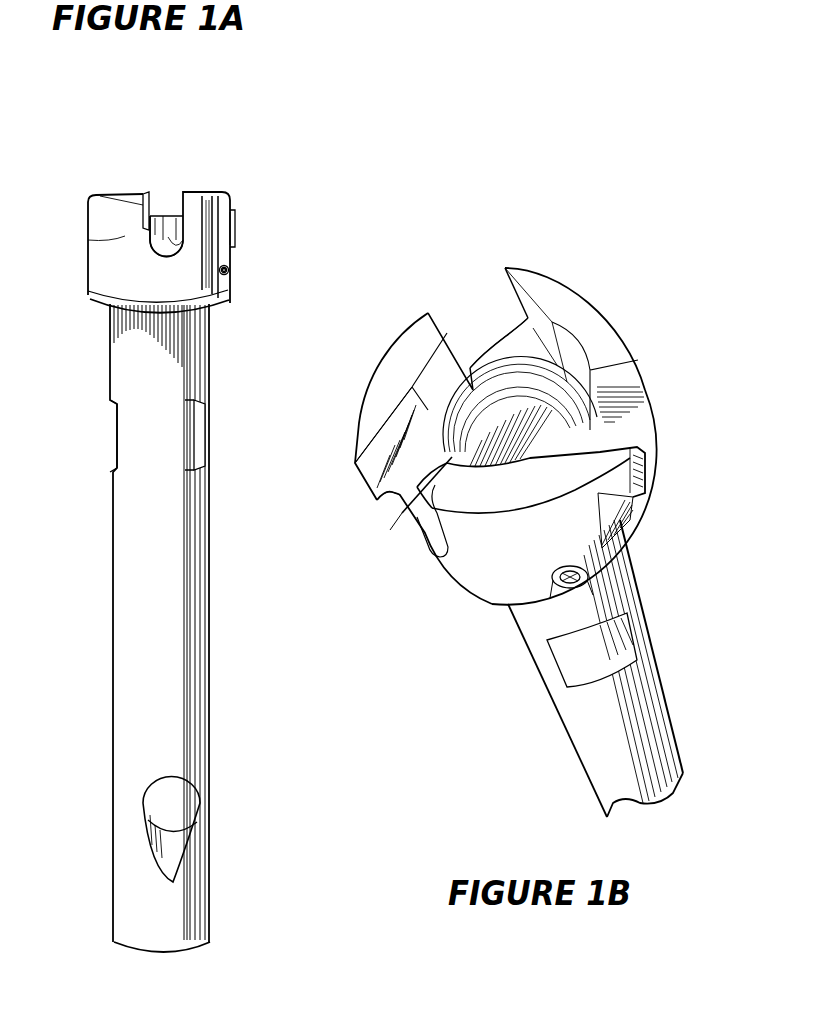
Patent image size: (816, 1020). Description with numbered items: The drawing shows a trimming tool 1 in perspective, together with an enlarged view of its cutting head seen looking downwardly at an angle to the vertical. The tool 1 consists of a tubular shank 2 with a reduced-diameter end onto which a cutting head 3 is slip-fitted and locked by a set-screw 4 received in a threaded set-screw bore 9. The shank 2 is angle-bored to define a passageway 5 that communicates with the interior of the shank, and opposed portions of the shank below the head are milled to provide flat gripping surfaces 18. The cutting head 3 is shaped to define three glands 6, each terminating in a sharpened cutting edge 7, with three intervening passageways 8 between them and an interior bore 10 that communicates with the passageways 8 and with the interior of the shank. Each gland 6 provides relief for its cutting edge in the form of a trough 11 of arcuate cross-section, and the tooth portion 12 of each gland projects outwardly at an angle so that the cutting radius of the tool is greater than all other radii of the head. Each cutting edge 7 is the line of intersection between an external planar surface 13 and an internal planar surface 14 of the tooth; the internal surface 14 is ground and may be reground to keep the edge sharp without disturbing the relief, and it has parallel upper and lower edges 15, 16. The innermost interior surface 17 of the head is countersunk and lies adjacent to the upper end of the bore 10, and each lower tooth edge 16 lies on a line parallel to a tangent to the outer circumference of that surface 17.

In FIG. 1A, the tool 1 is at (70, 548).
In FIG. 1A, the tubular shank 2 is at (153, 628).
In FIG. 1B, the tubular shank 2 is at (595, 668).
In FIG. 1A, the cutting head 3 is at (184, 206).
In FIG. 1B, the cutting head 3 is at (483, 442).
In FIG. 1A, the set-screw 4 is at (230, 268).
In FIG. 1B, the set-screw 4 is at (563, 583).
In FIG. 1A, the passageway 5 is at (187, 833).
In FIG. 1A, the gland 6 is at (217, 193).
In FIG. 1B, the gland 6 is at (588, 323).
In FIG. 1A, the cutting edge 7 is at (161, 212).
In FIG. 1B, the cutting edge 7 is at (372, 492).
In FIG. 1A, the intervening passageway 8 is at (162, 245).
In FIG. 1B, the intervening passageway 8 is at (482, 323).
In FIG. 1A, the threaded set-screw bore 9 is at (232, 278).
In FIG. 1B, the threaded set-screw bore 9 is at (558, 600).
In FIG. 1A, the interior bore 10 is at (180, 228).
In FIG. 1B, the interior bore 10 is at (548, 442).
In FIG. 1A, the trough 11 is at (133, 205).
In FIG. 1B, the trough 11 is at (363, 430).
In FIG. 1A, the tooth portion 12 is at (250, 207).
In FIG. 1B, the tooth portion 12 is at (340, 480).
In FIG. 1A, the external planar surface 13 is at (140, 197).
In FIG. 1B, the external planar surface 13 is at (640, 478).
In FIG. 1A, the internal planar surface 14 is at (173, 238).
In FIG. 1B, the internal planar surface 14 is at (525, 307).
In FIG. 1A, the upper edge 15 is at (149, 207).
In FIG. 1B, the upper edge 15 is at (355, 450).
In FIG. 1A, the lower edge 16 is at (142, 231).
In FIG. 1B, the lower edge 16 is at (381, 515).
In FIG. 1A, the interior surface 17 is at (177, 228).
In FIG. 1B, the interior surface 17 is at (402, 513).
In FIG. 1A, the flat gripping surface 18 is at (117, 416).
In FIG. 1B, the flat gripping surface 18 is at (570, 663).